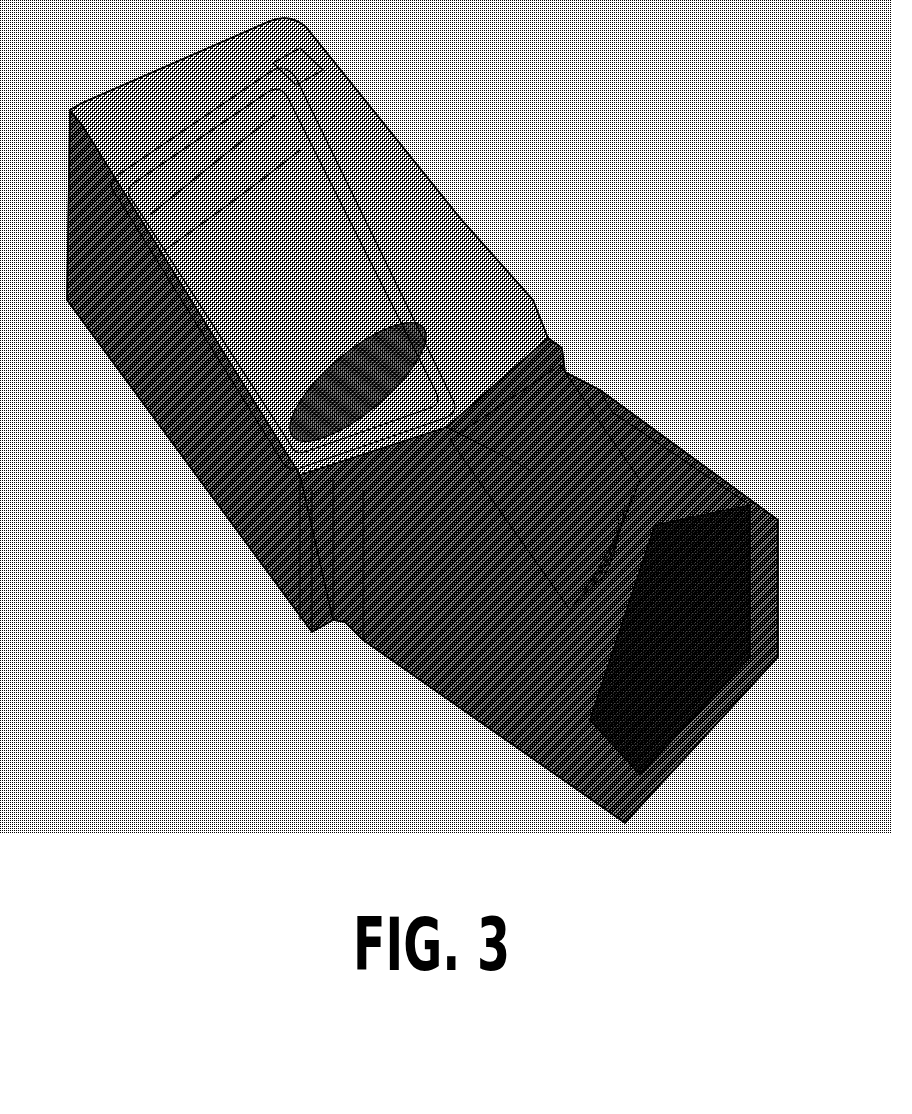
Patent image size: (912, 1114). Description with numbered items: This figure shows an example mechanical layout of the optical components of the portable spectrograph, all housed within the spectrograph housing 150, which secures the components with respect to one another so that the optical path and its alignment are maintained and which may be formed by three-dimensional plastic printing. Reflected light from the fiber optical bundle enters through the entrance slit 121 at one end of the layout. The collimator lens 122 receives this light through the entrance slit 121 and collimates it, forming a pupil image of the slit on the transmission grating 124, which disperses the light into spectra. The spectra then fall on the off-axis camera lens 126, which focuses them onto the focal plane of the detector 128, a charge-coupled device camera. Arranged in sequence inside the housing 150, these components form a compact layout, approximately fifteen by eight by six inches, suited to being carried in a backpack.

The spectrograph housing 150 is at (457, 220).
The entrance slit 121 is at (166, 62).
The collimator lens 122 is at (285, 235).
The transmission grating 124 is at (435, 427).
The off-axis camera lens 126 is at (510, 478).
The detector 128 is at (692, 697).